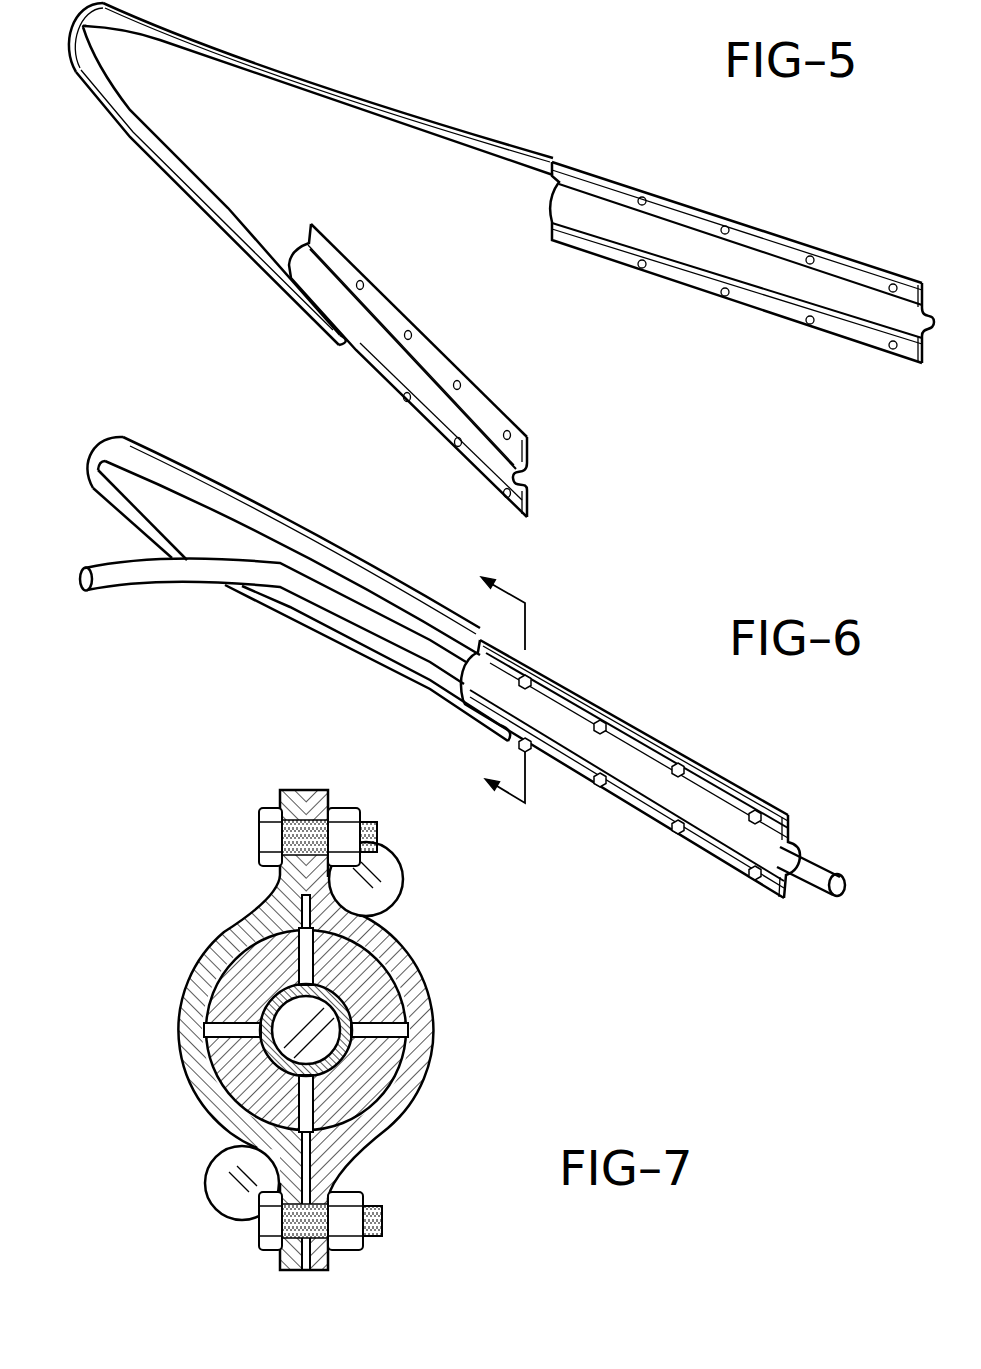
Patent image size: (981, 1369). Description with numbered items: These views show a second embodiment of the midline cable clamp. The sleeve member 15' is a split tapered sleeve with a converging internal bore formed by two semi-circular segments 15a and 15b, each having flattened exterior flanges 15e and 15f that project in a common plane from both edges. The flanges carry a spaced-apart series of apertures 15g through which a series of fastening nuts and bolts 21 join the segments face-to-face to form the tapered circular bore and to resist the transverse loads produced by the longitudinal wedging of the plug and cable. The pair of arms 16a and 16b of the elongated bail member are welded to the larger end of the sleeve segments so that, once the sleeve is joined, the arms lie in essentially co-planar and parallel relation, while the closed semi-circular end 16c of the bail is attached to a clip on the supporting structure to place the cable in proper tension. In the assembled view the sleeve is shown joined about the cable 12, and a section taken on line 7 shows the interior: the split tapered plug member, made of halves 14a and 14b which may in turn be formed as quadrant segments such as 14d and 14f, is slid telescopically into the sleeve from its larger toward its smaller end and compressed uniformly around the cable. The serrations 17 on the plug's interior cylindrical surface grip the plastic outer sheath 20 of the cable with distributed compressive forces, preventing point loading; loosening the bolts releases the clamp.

In FIG. 6, the cable 12 is at (122, 572).
In FIG. 7, the cable 12 is at (263, 1002).
In FIG. 7, the semi-circular half of plug member 14a is at (379, 948).
In FIG. 7, the semi-circular half of plug member 14b is at (243, 945).
In FIG. 7, the quadrant segment of plug member 14d is at (375, 1100).
In FIG. 7, the quadrant segment of plug member 14f is at (235, 1092).
In FIG. 5, the sleeve member 15' is at (755, 184).
In FIG. 6, the sleeve member 15' is at (638, 769).
In FIG. 5, the semi-circular sleeve segment 15a is at (771, 291).
In FIG. 7, the semi-circular sleeve segment 15a is at (427, 1079).
In FIG. 5, the semi-circular sleeve segment 15b is at (380, 374).
In FIG. 7, the semi-circular sleeve segment 15b is at (186, 1079).
In FIG. 5, the exterior flange 15e is at (490, 397).
In FIG. 7, the exterior flange 15e is at (313, 793).
In FIG. 5, the exterior flange 15f is at (466, 458).
In FIG. 7, the exterior flange 15f is at (331, 1258).
In FIG. 5, the apertures 15g is at (364, 283).
In FIG. 5, the bail arm 16a is at (323, 77).
In FIG. 6, the bail arm 16a is at (290, 520).
In FIG. 7, the bail arm 16a is at (390, 881).
In FIG. 5, the bail arm 16b is at (222, 224).
In FIG. 6, the bail arm 16b is at (328, 637).
In FIG. 7, the bail arm 16b is at (230, 1190).
In FIG. 5, the closed semi-circular end of bail member 16c is at (86, 30).
In FIG. 6, the closed semi-circular end of bail member 16c is at (99, 452).
In FIG. 7, the serrations 17 is at (357, 1078).
In FIG. 7, the plastic outer sheath 20 is at (341, 1000).
In FIG. 6, the fastening nuts and bolts 21 is at (608, 725).
In FIG. 7, the fastening nuts and bolts 21 is at (266, 811).
In FIG. 6, the section line 7— 7 is at (493, 682).